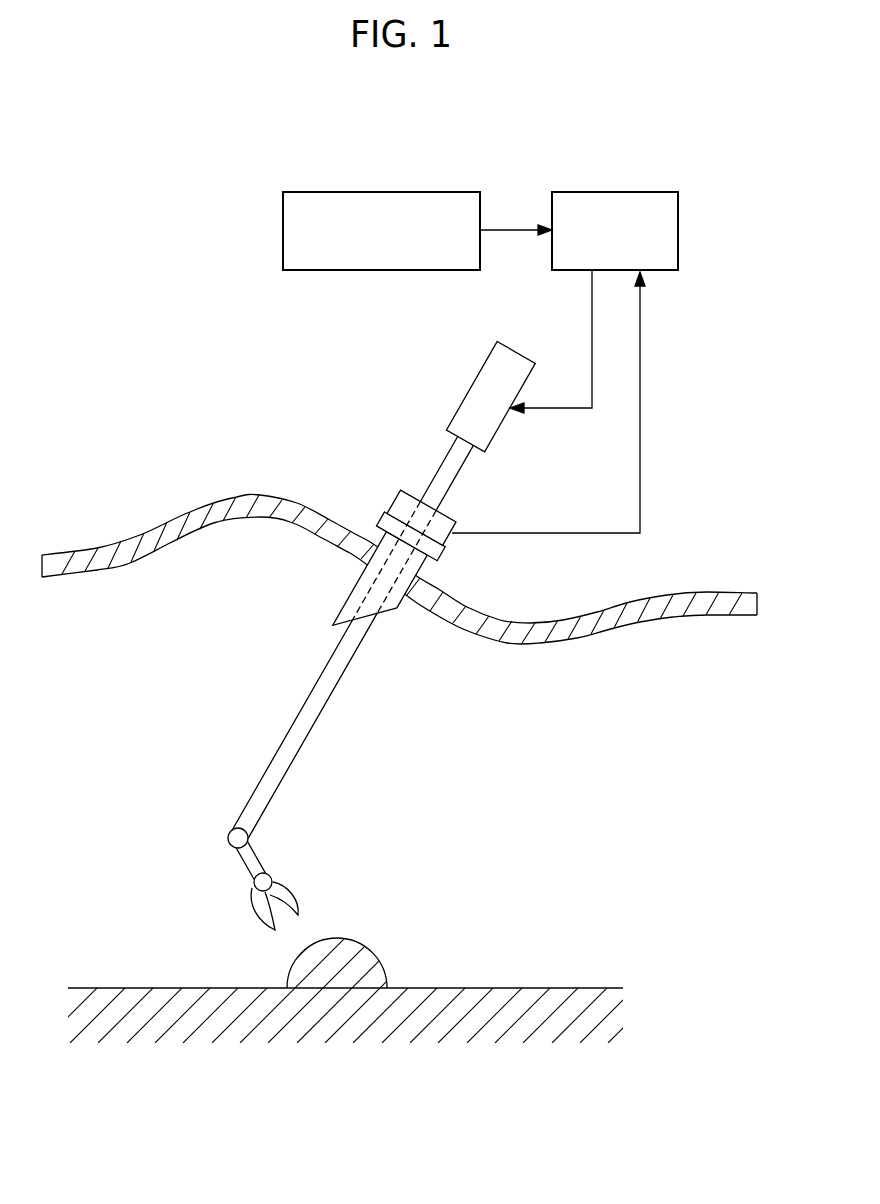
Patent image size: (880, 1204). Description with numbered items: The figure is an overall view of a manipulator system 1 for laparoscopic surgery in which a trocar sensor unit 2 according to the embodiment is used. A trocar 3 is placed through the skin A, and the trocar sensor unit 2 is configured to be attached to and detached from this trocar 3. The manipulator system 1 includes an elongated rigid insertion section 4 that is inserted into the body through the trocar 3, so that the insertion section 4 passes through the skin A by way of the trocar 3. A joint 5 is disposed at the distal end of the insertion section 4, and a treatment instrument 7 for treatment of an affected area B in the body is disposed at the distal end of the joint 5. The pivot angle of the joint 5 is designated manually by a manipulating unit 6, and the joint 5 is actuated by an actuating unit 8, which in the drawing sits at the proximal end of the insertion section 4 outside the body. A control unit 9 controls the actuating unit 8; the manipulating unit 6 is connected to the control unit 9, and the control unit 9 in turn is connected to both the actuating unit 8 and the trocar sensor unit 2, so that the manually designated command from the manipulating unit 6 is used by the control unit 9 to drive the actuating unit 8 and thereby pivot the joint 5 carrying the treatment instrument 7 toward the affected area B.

The manipulator system 1 is at (193, 256).
The trocar sensor unit 2 is at (445, 546).
The trocar 3 is at (393, 609).
The insertion section 4 is at (308, 732).
The joint 5 is at (228, 837).
The manipulating unit 6 is at (378, 191).
The treatment instrument 7 is at (278, 882).
The actuating unit 8 is at (471, 385).
The control unit 9 is at (615, 191).
The skin A is at (692, 592).
The affected area B is at (355, 938).